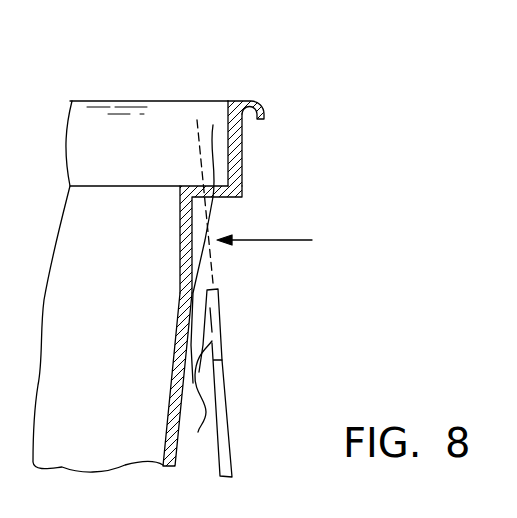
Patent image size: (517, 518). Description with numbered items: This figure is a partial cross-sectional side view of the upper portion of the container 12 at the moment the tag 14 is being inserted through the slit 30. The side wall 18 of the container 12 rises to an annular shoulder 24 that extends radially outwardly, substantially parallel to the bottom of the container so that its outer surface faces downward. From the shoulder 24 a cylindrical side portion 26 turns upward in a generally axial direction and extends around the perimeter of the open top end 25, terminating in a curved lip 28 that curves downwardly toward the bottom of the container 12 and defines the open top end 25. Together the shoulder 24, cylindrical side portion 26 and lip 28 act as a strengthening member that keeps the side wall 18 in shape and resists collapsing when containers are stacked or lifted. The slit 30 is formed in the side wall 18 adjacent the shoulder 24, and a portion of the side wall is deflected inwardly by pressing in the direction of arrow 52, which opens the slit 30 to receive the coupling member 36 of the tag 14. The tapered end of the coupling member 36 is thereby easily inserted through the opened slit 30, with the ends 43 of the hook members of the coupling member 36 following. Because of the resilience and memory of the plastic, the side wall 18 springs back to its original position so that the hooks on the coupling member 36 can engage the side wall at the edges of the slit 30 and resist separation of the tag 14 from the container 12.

The container 12 is at (104, 85).
The open top end 25 is at (158, 125).
The lip 28 is at (247, 100).
The cylindrical side portion 26 is at (242, 161).
The annular shoulder 24 is at (229, 197).
The side wall 18 is at (180, 298).
The slit 30 is at (210, 191).
The ends of the hook members 43 is at (199, 289).
The arrow 52 is at (273, 243).
The coupling member 36 is at (222, 330).
The tag 14 is at (225, 403).